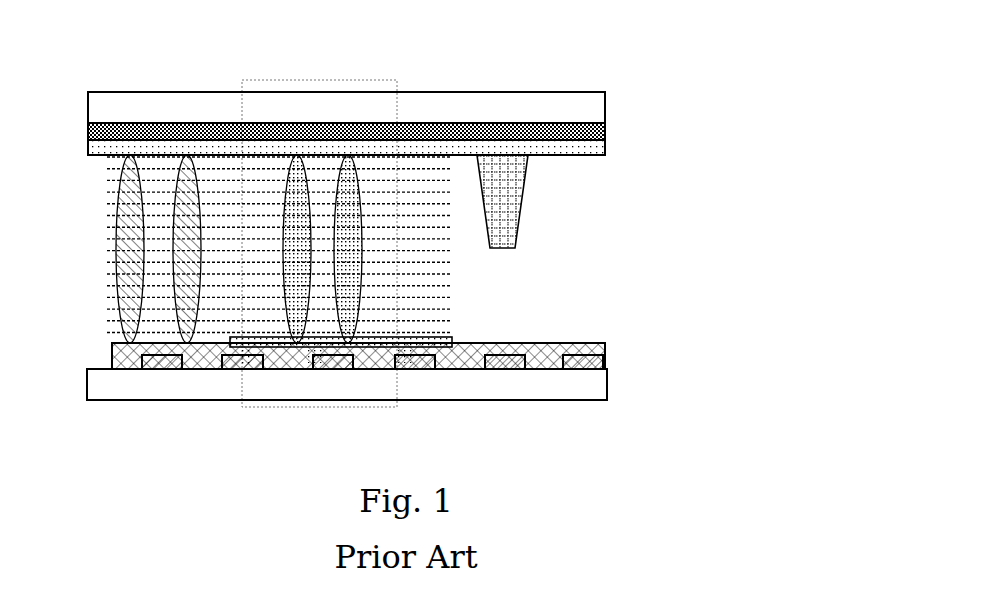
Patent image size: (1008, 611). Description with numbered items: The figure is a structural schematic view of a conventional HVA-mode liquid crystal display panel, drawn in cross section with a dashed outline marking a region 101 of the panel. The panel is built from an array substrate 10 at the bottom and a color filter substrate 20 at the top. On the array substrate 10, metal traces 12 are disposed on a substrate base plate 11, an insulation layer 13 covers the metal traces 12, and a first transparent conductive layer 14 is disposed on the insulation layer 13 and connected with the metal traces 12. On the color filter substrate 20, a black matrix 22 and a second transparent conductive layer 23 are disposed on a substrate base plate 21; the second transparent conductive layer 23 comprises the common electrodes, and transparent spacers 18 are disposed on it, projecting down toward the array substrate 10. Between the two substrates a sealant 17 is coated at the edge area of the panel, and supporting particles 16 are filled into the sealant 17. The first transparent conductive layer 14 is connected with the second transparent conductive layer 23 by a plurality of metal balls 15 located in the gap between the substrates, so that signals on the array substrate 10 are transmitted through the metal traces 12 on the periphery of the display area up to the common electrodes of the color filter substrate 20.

The pixel region 101 is at (338, 80).
The array substrate 10 is at (399, 351).
The substrate base plate 11 is at (607, 397).
The metal traces 12 is at (605, 362).
The insulation layer 13 is at (605, 343).
The first transparent conductive layer 14 is at (452, 343).
The metal balls 15 is at (360, 313).
The supporting particles 16 is at (114, 268).
The sealant 17 is at (112, 217).
The spacers 18 is at (520, 215).
The color filter substrate 20 is at (399, 108).
The substrate base plate 21 is at (605, 107).
The black matrix 22 is at (605, 137).
The second transparent conductive layer 23 is at (605, 155).